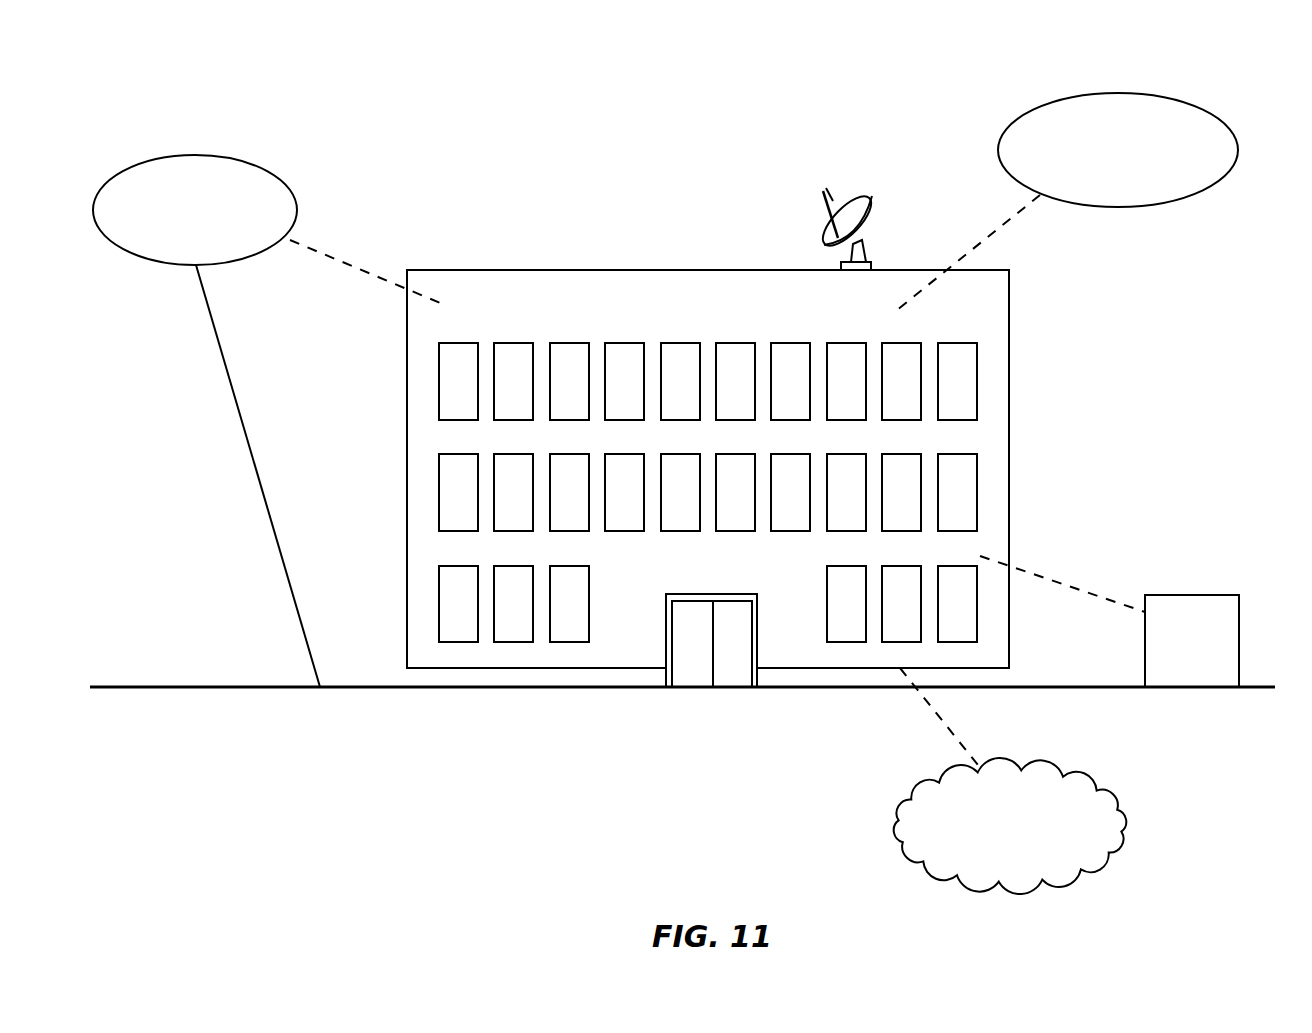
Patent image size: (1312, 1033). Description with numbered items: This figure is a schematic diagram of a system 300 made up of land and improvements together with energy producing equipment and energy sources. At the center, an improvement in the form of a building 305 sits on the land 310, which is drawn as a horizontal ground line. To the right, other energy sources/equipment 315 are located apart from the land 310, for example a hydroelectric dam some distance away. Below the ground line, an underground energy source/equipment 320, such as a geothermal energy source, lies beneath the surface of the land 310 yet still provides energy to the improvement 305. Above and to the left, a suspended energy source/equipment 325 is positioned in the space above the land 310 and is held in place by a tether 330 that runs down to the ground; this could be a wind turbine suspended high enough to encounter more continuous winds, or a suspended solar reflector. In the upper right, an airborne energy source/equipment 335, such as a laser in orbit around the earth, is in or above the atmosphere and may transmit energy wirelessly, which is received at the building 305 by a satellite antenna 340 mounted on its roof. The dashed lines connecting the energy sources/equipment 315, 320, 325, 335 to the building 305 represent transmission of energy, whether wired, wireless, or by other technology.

The system 300 is at (402, 65).
The improvement (building) 305 is at (1010, 391).
The land 310 is at (250, 689).
The energy sources/equipment 315 is at (1198, 595).
The underground energy source/equipment 320 is at (1098, 783).
The suspended energy source/equipment 325 is at (282, 178).
The tether 330 is at (231, 391).
The airborne energy source/equipment 335 is at (1195, 108).
The satellite antenna 340 is at (822, 242).